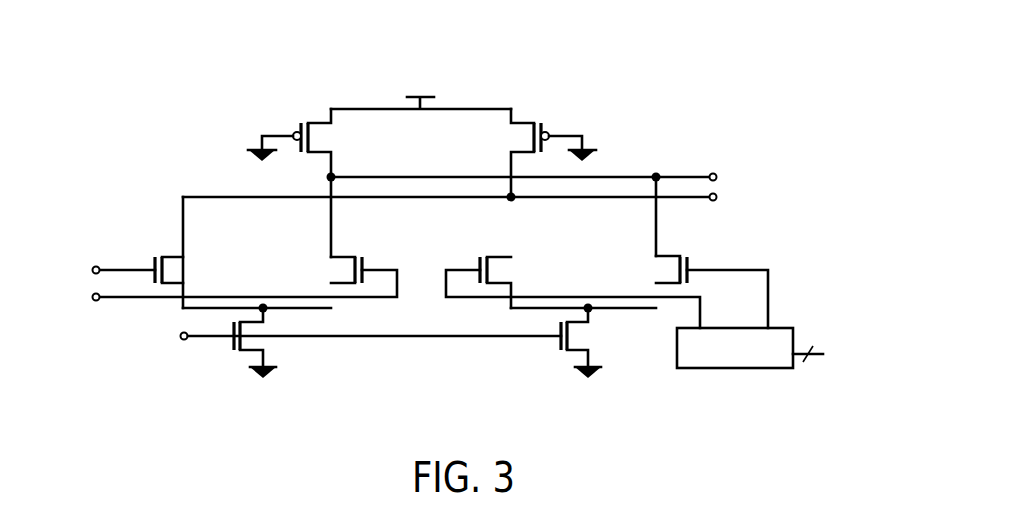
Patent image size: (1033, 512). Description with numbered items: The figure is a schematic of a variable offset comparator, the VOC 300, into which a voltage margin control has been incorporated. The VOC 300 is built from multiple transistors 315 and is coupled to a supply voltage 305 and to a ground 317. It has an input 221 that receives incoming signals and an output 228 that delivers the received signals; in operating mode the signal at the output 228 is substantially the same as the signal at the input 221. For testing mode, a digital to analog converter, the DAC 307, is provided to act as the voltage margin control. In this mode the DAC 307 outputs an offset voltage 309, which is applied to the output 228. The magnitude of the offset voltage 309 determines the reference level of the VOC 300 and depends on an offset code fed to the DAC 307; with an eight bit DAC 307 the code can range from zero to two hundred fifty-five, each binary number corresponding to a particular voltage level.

The variable offset comparator 300 is at (634, 69).
The input 221 is at (82, 268).
The transistors 315 is at (172, 255).
The supply voltage 305 is at (143, 325).
The ground 317 is at (268, 372).
The output 228 is at (713, 170).
The offset voltage 309 is at (760, 267).
The digital to analog converter 307 is at (727, 370).